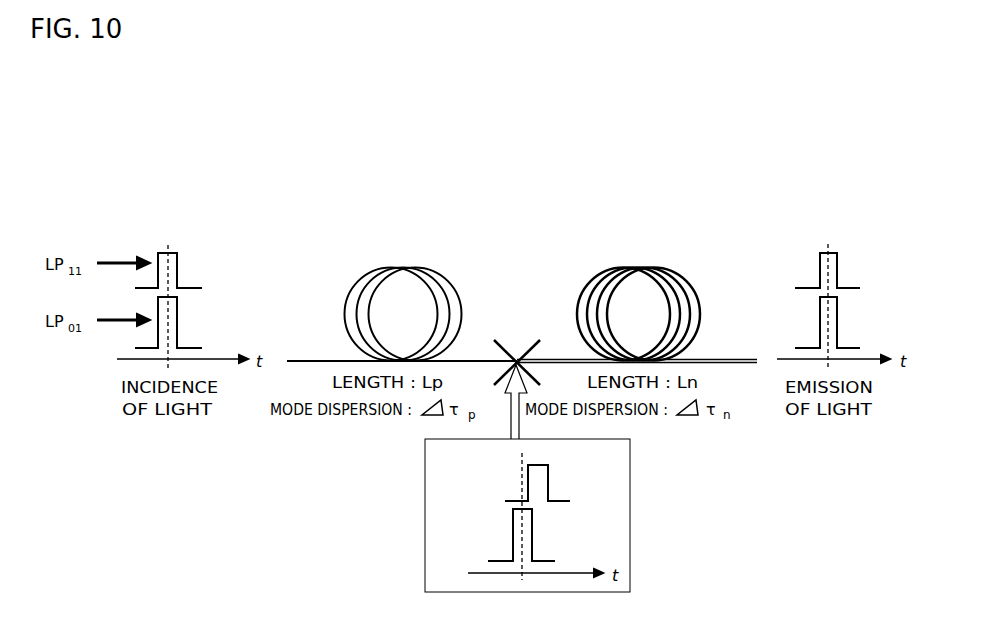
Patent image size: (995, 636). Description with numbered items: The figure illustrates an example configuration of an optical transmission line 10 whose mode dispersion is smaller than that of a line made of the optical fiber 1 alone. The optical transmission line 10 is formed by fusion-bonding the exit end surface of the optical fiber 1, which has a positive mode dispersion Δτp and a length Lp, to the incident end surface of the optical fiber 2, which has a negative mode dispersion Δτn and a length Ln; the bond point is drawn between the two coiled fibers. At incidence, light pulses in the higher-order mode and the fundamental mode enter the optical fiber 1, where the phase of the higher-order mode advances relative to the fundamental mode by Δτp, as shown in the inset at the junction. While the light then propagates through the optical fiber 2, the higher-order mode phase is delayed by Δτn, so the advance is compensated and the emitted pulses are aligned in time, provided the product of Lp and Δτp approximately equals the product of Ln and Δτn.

The optical fiber 1 is at (458, 292).
The optical fiber 2 is at (692, 290).
The optical transmission line 10 is at (681, 169).